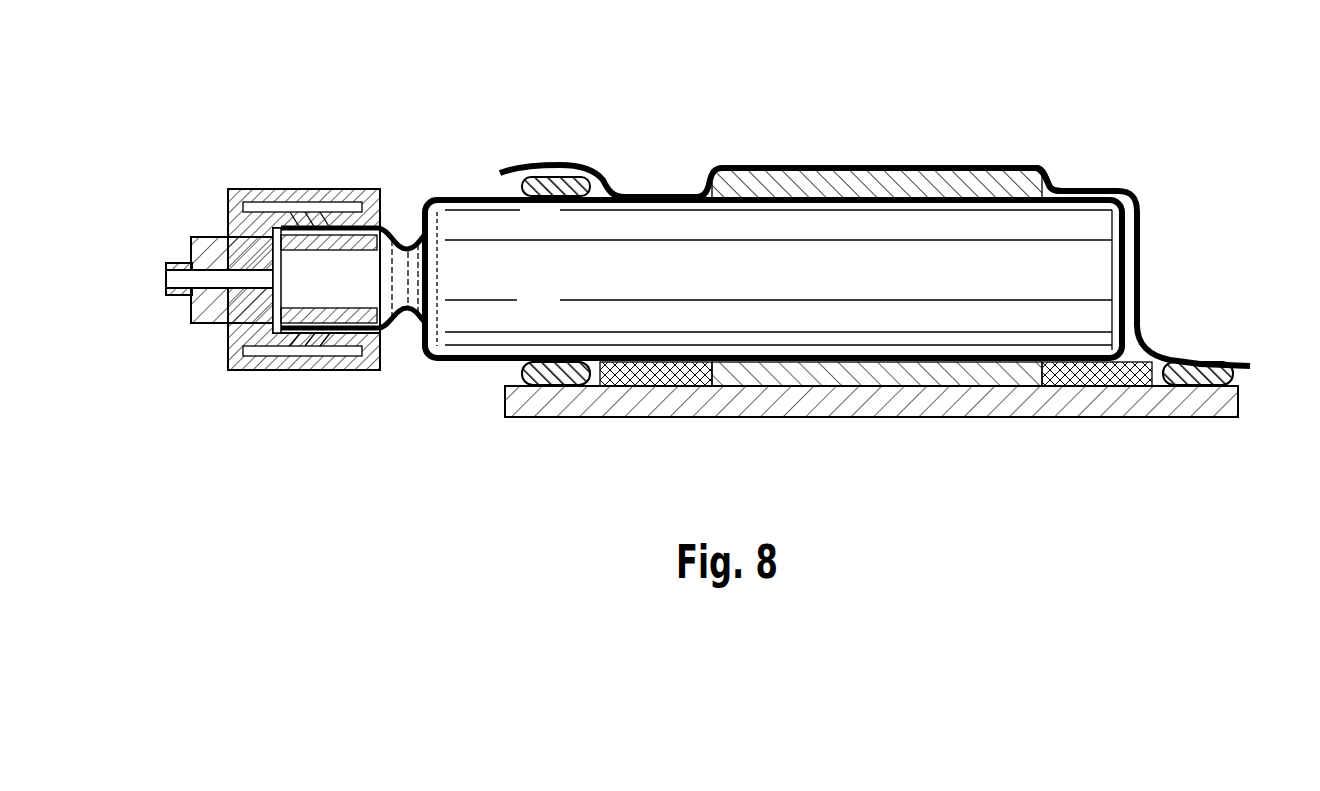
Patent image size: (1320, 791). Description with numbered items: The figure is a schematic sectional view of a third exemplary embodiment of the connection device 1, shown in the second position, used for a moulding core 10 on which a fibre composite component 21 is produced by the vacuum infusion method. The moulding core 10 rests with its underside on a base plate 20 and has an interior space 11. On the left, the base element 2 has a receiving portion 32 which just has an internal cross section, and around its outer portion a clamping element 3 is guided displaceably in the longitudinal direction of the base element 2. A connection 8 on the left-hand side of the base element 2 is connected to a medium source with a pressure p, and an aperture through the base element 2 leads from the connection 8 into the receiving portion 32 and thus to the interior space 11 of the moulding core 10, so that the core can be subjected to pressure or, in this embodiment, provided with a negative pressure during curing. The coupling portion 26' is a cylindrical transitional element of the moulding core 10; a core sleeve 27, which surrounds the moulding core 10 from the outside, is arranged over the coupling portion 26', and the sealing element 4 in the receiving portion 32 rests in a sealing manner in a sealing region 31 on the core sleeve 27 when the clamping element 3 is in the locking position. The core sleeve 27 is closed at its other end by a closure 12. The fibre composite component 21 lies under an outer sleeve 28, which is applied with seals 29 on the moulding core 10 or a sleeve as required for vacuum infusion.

The connection device 1 is at (410, 120).
The base element 2 is at (205, 245).
The clamping element 3 is at (270, 190).
The sealing element 4 is at (330, 195).
The connection 8 is at (186, 296).
The moulding core 10 is at (662, 225).
The interior space 11 is at (393, 262).
The closure 12 is at (1130, 300).
The base plate 20 is at (870, 400).
The fibre composite component 21 is at (880, 190).
The coupling portion 26' is at (353, 354).
The core sleeve 27 is at (483, 195).
The outer sleeve 28 is at (1045, 178).
The seal 29 is at (560, 180).
The sealing region 31 is at (312, 350).
The receiving portion 32 is at (302, 178).